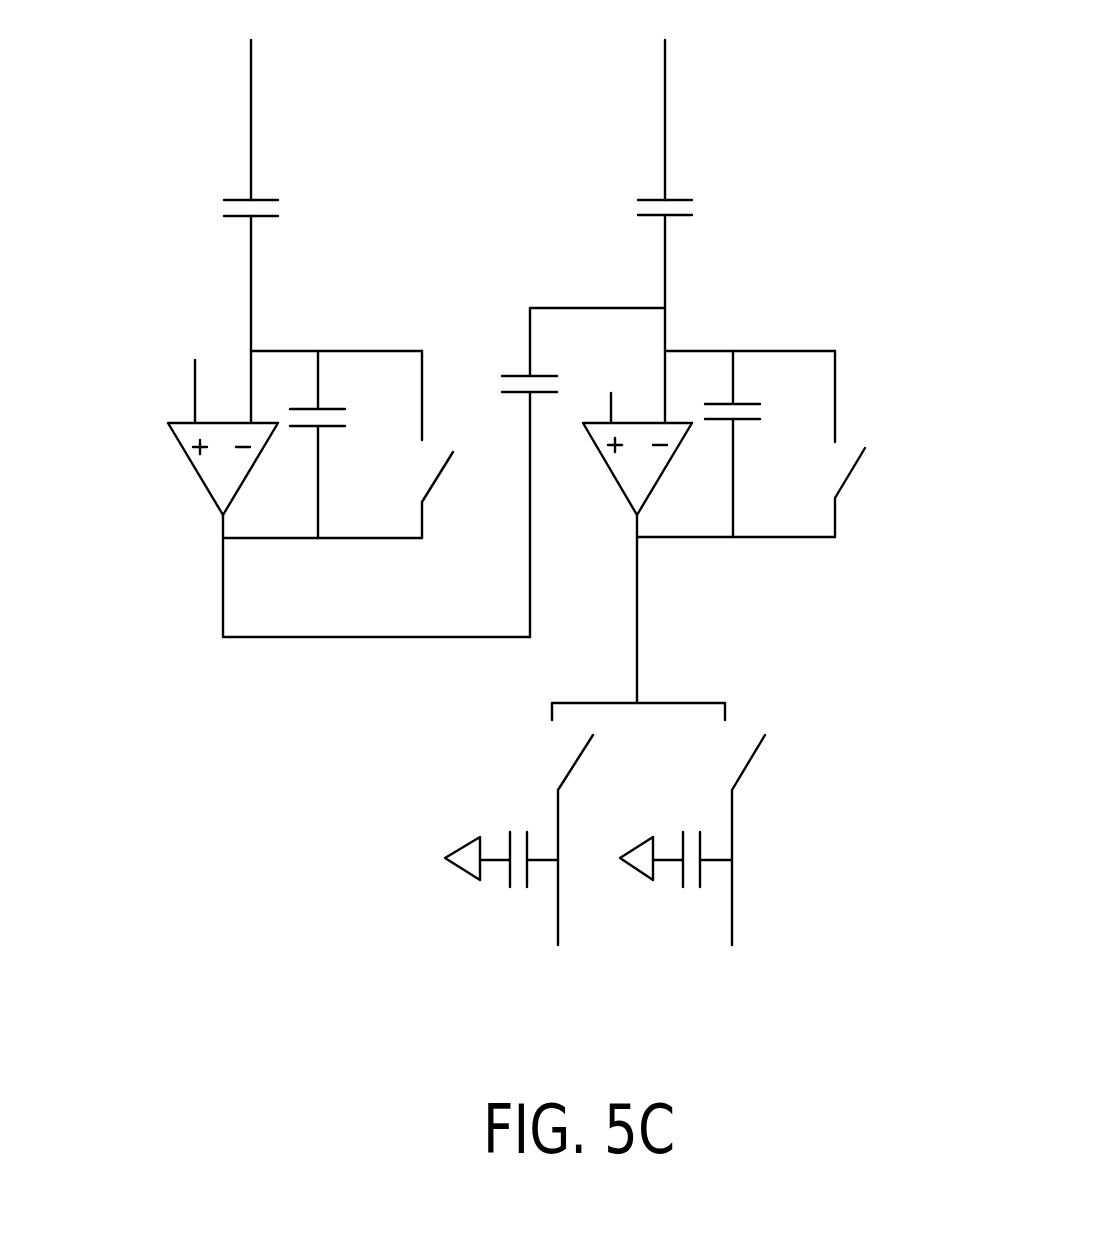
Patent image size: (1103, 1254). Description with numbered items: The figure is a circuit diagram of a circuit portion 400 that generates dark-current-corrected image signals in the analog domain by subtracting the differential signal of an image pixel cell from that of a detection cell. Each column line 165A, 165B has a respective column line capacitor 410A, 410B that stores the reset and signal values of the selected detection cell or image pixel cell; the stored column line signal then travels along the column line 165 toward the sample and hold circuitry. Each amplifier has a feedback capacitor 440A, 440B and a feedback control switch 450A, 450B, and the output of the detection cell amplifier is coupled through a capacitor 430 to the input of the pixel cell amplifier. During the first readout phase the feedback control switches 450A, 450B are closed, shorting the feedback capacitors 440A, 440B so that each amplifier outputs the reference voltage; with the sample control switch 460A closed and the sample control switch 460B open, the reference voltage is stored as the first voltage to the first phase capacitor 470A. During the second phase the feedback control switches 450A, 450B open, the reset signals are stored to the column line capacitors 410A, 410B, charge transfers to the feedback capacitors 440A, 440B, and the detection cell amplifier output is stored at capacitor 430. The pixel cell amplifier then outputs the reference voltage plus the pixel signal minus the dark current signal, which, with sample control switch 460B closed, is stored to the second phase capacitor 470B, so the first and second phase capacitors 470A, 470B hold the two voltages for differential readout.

The circuit portion 400 is at (496, 519).
The column line capacitor 410A is at (218, 207).
The column line capacitor 410B is at (631, 207).
The column line 165A is at (252, 273).
The column line 165B is at (667, 262).
The column line 165 is at (640, 595).
The capacitor 430 is at (513, 373).
The feedback capacitor 440A is at (333, 428).
The feedback capacitor 440B is at (748, 422).
The feedback control switch 450A is at (435, 480).
The feedback control switch 450B is at (852, 477).
The sample control switch 460A is at (577, 760).
The sample control switch 460B is at (750, 760).
The first phase capacitor 470A is at (508, 877).
The second phase capacitor 470B is at (682, 877).